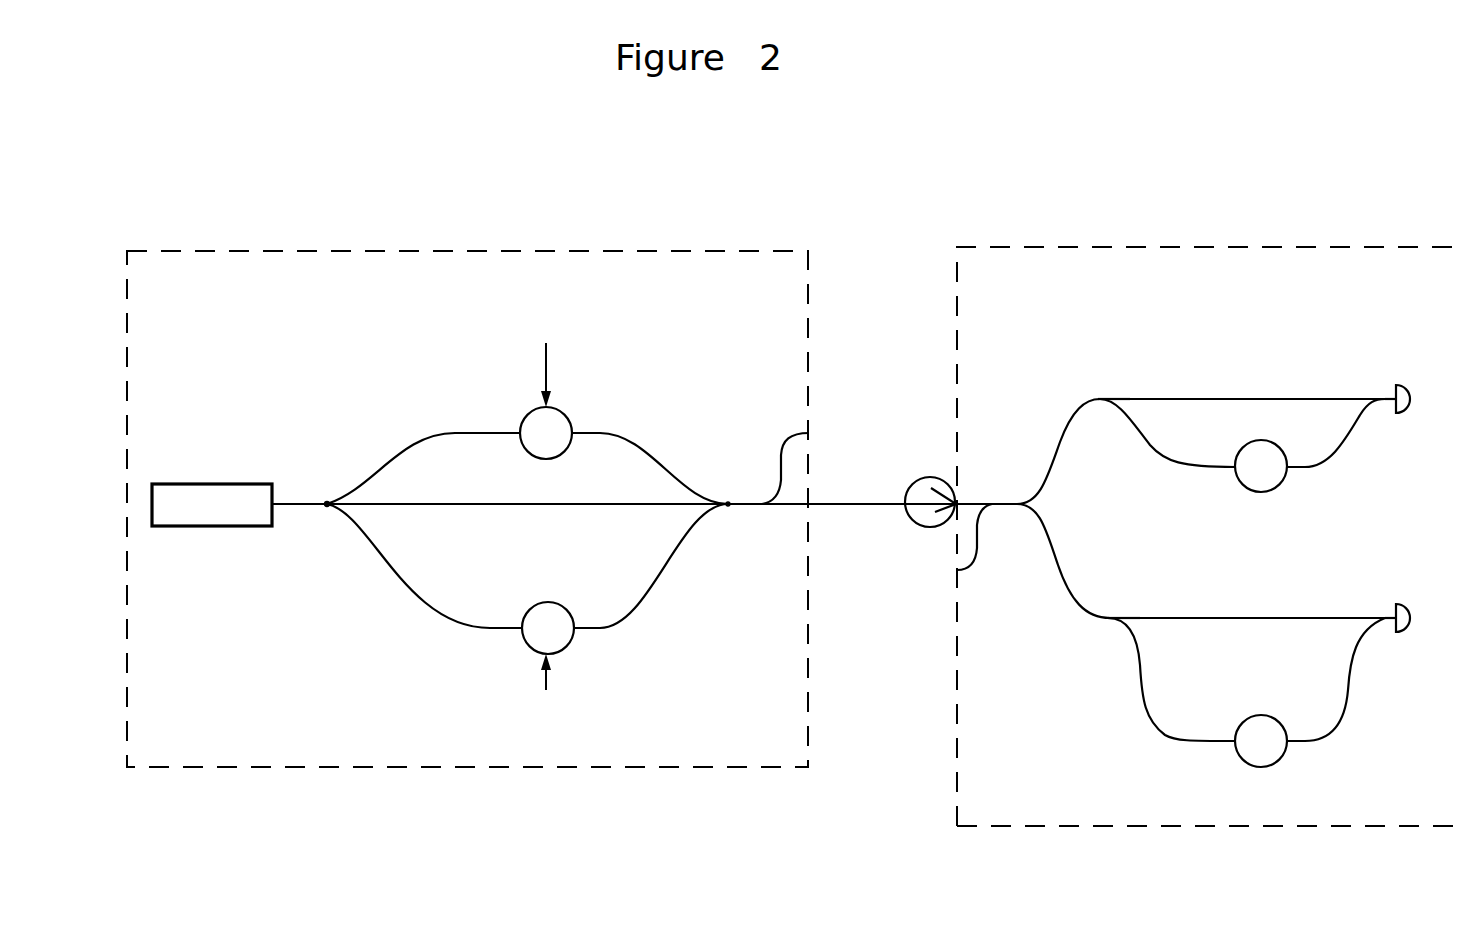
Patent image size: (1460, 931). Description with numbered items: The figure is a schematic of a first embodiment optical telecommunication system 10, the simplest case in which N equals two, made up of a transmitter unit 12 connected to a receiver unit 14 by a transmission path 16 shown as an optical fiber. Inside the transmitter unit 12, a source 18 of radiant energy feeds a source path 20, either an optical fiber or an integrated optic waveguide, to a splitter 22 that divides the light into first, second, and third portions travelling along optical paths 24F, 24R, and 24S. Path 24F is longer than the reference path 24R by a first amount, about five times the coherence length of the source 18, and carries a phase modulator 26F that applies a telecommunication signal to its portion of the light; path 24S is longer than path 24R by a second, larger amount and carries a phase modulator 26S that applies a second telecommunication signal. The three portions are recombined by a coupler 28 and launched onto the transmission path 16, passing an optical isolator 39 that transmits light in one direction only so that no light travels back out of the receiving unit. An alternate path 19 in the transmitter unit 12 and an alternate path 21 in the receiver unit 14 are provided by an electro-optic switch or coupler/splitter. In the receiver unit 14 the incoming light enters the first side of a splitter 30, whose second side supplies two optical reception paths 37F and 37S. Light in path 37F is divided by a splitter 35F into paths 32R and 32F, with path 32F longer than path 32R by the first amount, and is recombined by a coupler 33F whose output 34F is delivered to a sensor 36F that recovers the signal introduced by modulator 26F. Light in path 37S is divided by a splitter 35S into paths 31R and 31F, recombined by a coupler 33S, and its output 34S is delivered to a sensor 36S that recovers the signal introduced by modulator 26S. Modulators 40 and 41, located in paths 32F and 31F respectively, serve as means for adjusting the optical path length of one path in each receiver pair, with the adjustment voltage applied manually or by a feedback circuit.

The optical telecommunication system 10 is at (1034, 141).
The transmitter unit 12 is at (742, 250).
The receiver unit 14 is at (1278, 245).
The transmission path 16 is at (840, 504).
The source 18 is at (216, 527).
The alternate path 19 is at (766, 495).
The source path 20 is at (300, 500).
The alternate path 21 is at (995, 498).
The splitter 22 is at (352, 524).
The first optical path 24F is at (388, 466).
The third optical path 24S is at (443, 618).
The second optical path 24R is at (553, 506).
The phase modulator 26F is at (566, 419).
The phase modulator 26S is at (571, 640).
The coupler 28 is at (709, 516).
The splitter 30 is at (1018, 510).
The optical path 31R is at (1252, 617).
The optical path 31F is at (1152, 732).
The optical path 32R is at (1233, 398).
The optical path 32F is at (1159, 452).
The coupler 33F is at (1359, 395).
The coupler 33S is at (1368, 615).
The output fiber of first interferometer 34F is at (1387, 402).
The output fiber of second interferometer 34S is at (1385, 623).
The splitter 35F is at (1095, 398).
The splitter 35S is at (1121, 632).
The sensor 36F is at (1406, 389).
The sensor 36S is at (1406, 609).
The optical reception path 37F is at (1057, 448).
The optical reception path 37S is at (1085, 604).
The optical isolator 39 is at (927, 478).
The modulator 40 is at (1276, 480).
The modulator 41 is at (1278, 750).